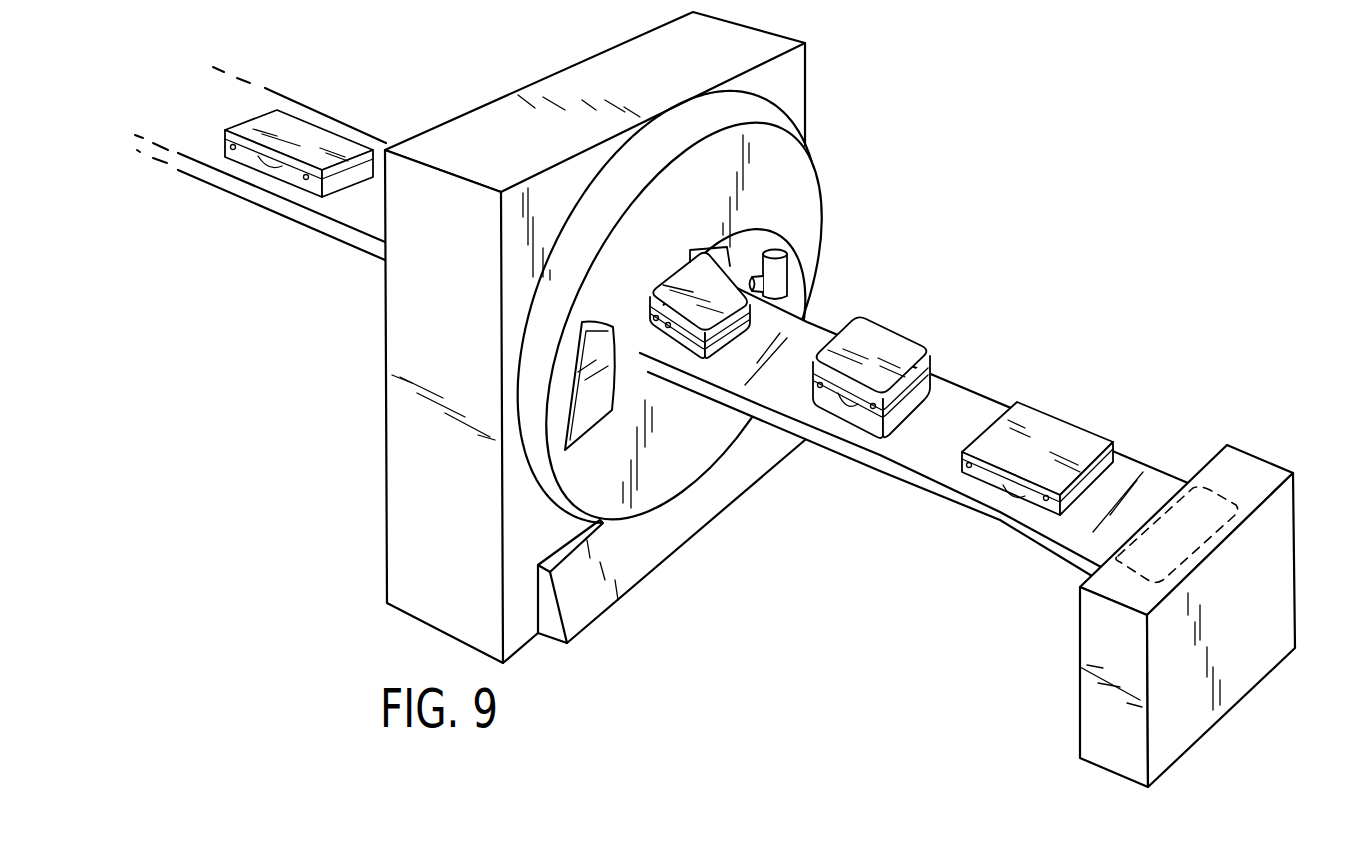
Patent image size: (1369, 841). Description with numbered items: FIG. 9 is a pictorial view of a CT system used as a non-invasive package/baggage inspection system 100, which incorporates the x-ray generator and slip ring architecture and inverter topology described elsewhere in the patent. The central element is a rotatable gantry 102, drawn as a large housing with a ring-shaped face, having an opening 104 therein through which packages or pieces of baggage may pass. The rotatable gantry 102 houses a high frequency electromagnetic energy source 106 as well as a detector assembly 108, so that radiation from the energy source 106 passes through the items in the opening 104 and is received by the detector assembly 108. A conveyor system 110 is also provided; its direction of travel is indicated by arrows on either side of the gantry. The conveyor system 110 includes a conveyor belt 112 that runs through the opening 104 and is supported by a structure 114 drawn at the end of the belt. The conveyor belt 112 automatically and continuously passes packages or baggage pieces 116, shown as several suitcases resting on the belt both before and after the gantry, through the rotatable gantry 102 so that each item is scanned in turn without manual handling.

The package/baggage inspection system 100 is at (713, 399).
The rotatable gantry 102 is at (800, 188).
The opening 104 is at (710, 260).
The high frequency electromagnetic energy source 106 is at (788, 272).
The detector assembly 108 is at (592, 420).
The conveyor system 110 is at (130, 184).
The conveyor belt 112 is at (338, 213).
The structure 114 is at (1280, 577).
The packages or baggage pieces 116 is at (316, 136).